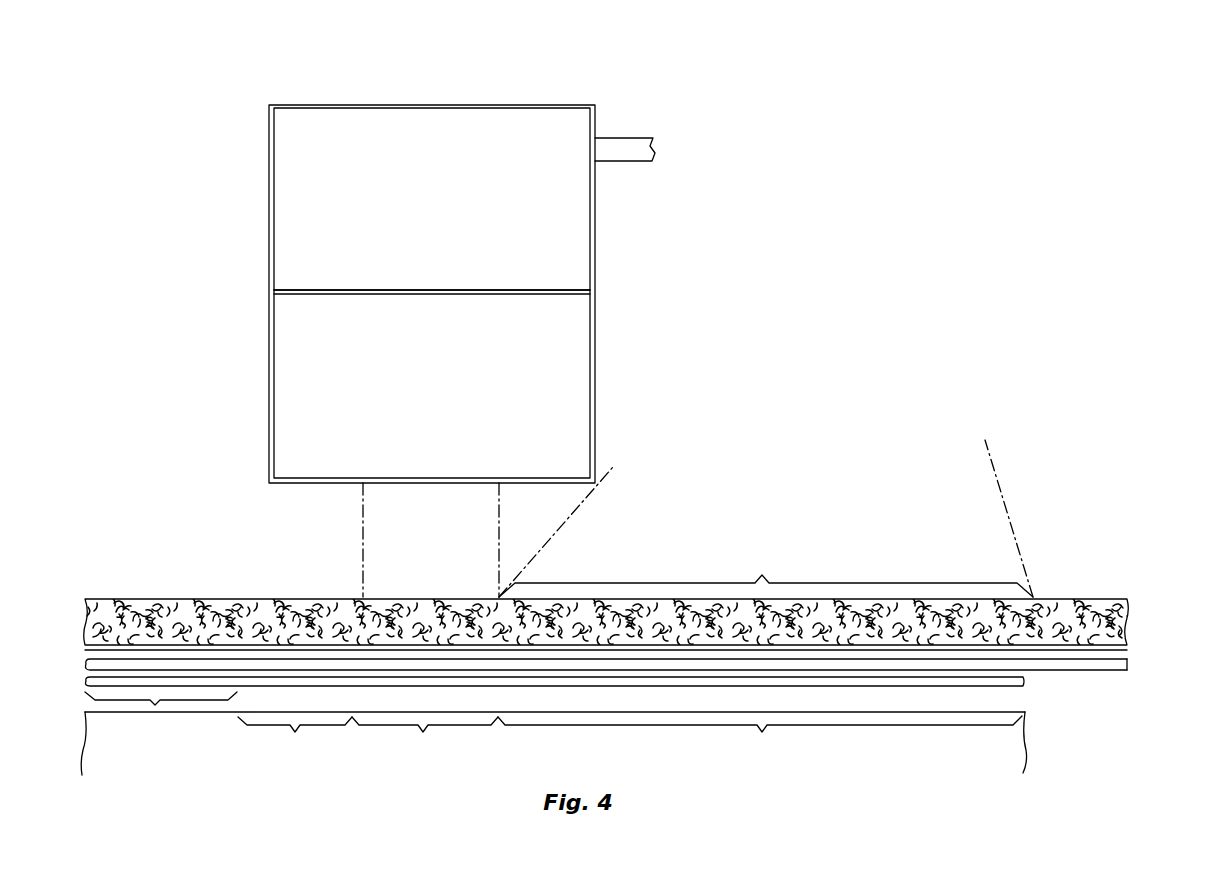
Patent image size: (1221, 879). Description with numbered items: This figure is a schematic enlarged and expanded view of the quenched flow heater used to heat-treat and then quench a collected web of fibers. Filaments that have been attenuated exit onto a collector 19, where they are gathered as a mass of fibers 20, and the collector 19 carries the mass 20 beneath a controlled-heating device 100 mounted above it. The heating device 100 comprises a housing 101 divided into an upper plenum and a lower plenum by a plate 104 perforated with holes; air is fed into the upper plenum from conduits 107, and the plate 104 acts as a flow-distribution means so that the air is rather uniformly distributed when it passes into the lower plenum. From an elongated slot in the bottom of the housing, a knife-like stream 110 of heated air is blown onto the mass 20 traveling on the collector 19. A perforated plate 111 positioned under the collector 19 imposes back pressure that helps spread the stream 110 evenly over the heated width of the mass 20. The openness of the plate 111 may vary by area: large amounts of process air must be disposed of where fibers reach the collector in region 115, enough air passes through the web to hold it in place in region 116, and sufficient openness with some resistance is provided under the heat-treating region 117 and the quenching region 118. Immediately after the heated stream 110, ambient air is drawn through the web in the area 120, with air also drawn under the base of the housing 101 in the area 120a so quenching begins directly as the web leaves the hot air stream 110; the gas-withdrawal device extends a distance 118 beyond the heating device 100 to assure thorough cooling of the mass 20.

The controlled-heating device 100 is at (638, 80).
The housing 101 is at (593, 262).
The plate 104 is at (433, 292).
The conduits 107 is at (641, 163).
The stream of heated air 110 is at (363, 558).
The area under the base of the housing 120a is at (563, 520).
The quenching area 120 is at (766, 518).
The mass of fibers 20 is at (205, 599).
The collector 19 is at (1124, 668).
The perforated plate 111 is at (1023, 682).
The fiber-collecting region 115 is at (153, 705).
The web-holding region 116 is at (295, 737).
The heat-treating region 117 is at (425, 737).
The quenching region 118 is at (760, 737).